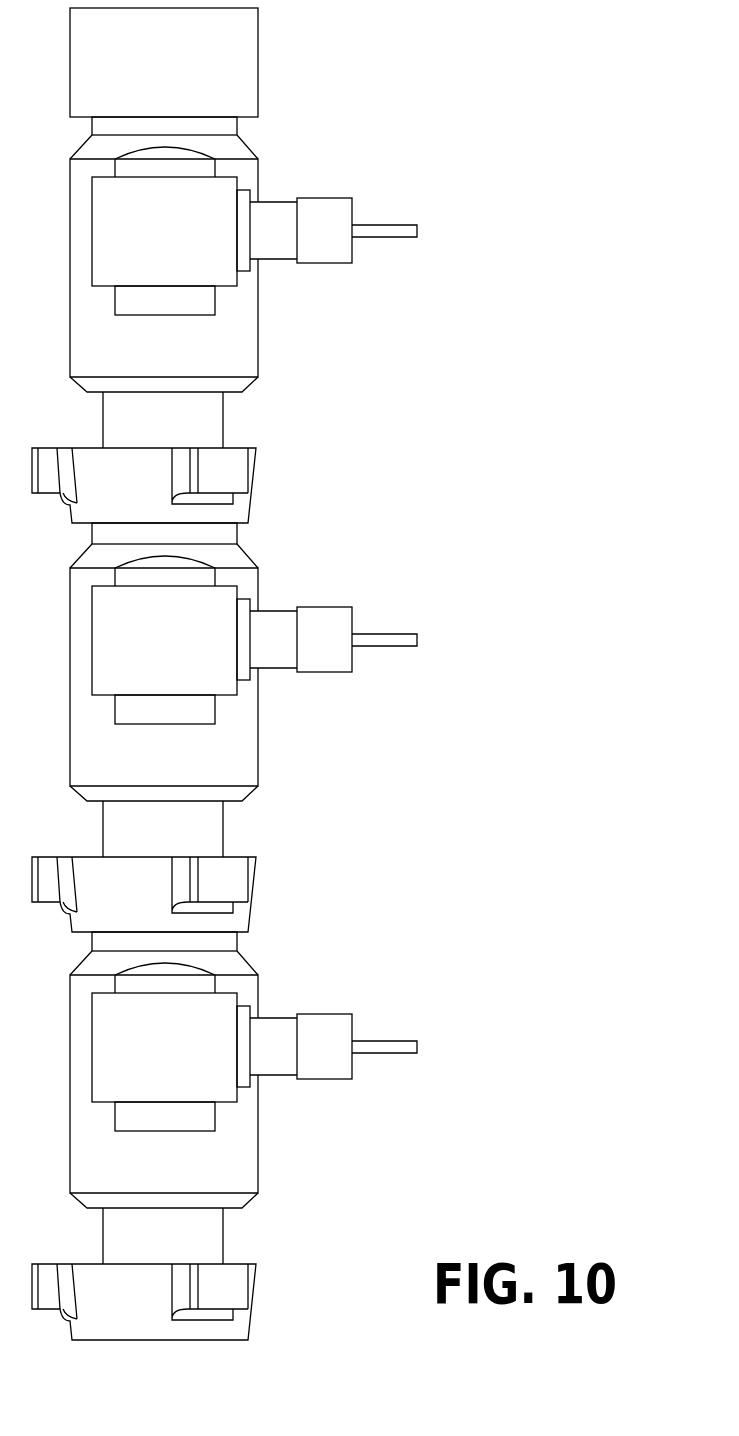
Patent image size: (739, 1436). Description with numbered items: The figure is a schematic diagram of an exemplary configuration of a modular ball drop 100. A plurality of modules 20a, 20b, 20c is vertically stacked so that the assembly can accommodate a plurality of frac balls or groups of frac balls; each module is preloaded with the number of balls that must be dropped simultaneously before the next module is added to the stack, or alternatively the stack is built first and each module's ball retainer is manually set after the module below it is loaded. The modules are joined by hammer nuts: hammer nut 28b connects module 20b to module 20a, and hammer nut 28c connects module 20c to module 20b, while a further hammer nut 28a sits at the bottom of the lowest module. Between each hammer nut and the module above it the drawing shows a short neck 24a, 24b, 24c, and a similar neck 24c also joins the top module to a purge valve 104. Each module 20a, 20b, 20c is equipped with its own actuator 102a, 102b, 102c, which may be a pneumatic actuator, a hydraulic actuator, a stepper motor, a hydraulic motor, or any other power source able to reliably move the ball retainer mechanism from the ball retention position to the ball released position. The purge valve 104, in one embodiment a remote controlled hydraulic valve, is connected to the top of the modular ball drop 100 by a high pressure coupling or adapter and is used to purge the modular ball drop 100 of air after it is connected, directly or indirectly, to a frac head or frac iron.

The modular ball drop 100 is at (497, 223).
The purge valve 104 is at (258, 62).
The module 20a is at (248, 992).
The module 20b is at (248, 585).
The module 20c is at (248, 175).
The connection neck 24a is at (237, 942).
The connection neck 24b is at (237, 537).
The connection neck 24c is at (237, 127).
The hammer nut 28a is at (255, 1287).
The hammer nut 28b is at (255, 893).
The hammer nut 28c is at (255, 483).
The actuator 102a is at (205, 1080).
The actuator 102b is at (207, 671).
The actuator 102c is at (207, 262).